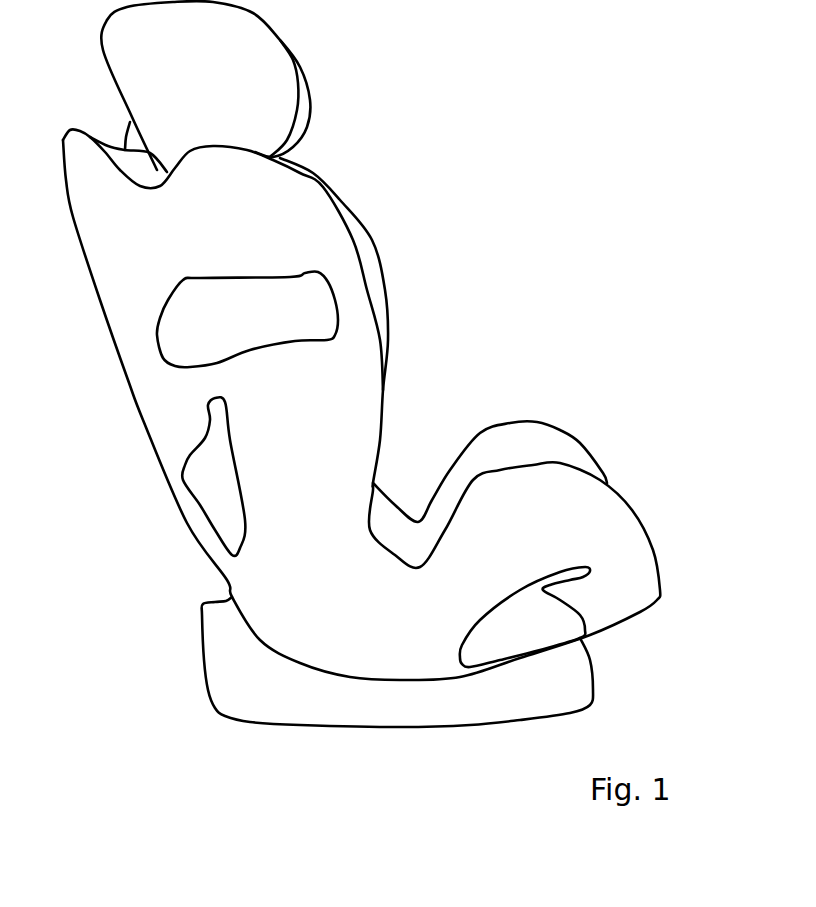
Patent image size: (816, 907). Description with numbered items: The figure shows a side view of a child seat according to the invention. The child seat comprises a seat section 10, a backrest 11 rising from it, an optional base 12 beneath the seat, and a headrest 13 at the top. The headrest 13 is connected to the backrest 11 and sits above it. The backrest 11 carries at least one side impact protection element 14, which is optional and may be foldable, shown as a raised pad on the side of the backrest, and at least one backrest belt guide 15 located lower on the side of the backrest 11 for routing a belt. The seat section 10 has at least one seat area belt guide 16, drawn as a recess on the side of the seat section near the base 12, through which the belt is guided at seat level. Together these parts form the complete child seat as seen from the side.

The seat section 10 is at (571, 524).
The backrest 11 is at (187, 382).
The base 12 is at (552, 690).
The headrest 13 is at (250, 82).
The side impact protection element 14 is at (212, 319).
The backrest belt guide 15 is at (214, 487).
The seat area belt guide 16 is at (557, 622).